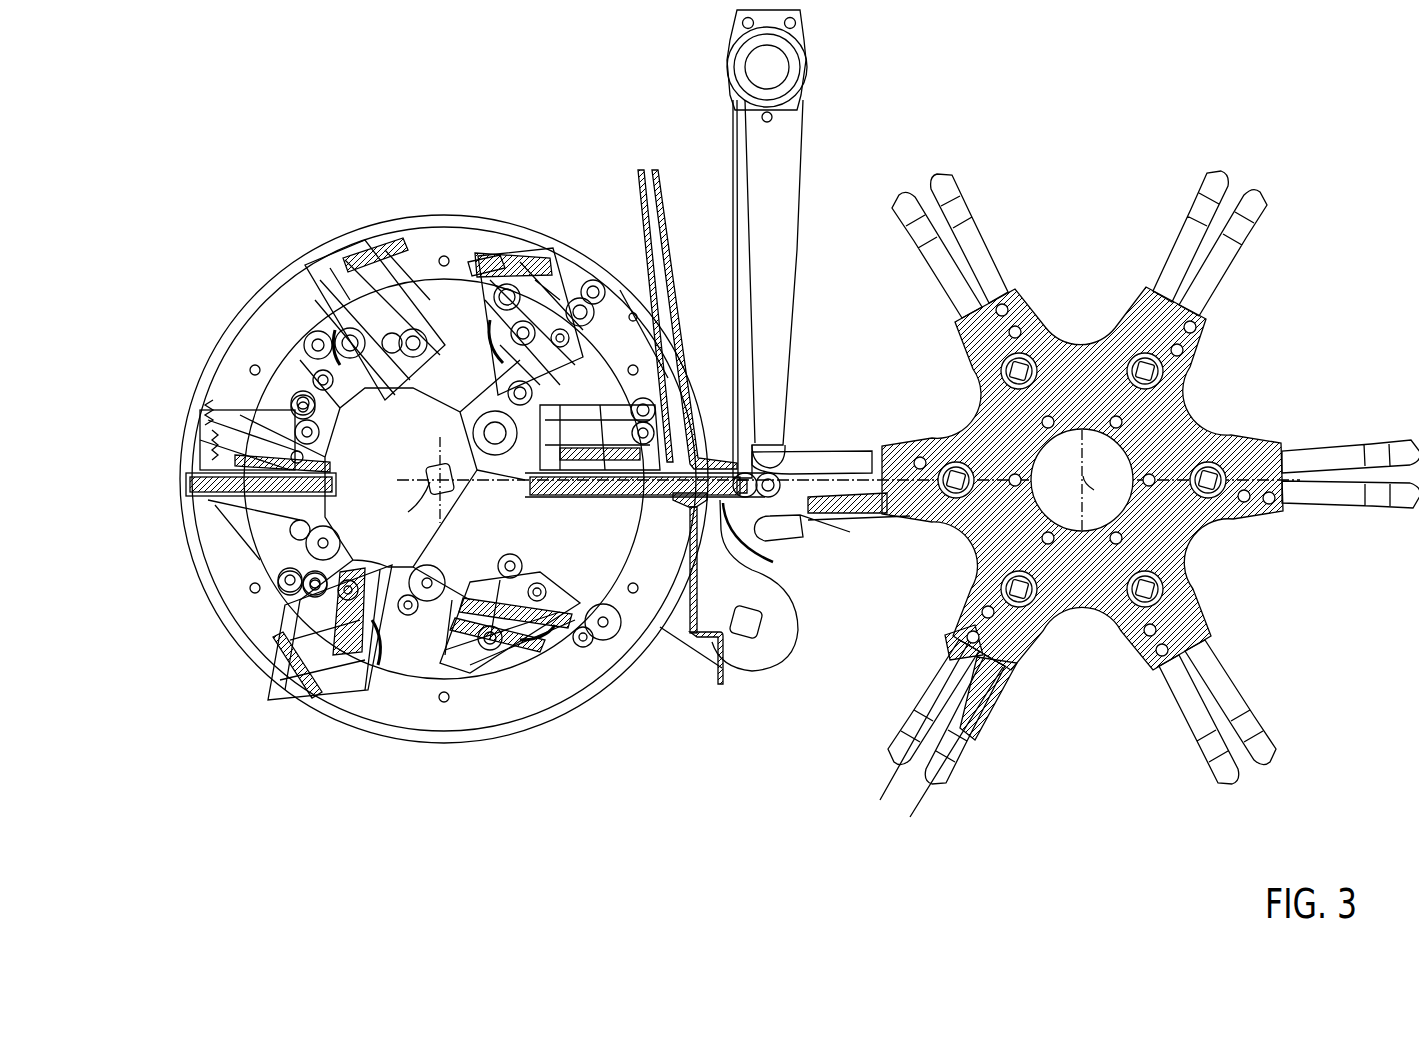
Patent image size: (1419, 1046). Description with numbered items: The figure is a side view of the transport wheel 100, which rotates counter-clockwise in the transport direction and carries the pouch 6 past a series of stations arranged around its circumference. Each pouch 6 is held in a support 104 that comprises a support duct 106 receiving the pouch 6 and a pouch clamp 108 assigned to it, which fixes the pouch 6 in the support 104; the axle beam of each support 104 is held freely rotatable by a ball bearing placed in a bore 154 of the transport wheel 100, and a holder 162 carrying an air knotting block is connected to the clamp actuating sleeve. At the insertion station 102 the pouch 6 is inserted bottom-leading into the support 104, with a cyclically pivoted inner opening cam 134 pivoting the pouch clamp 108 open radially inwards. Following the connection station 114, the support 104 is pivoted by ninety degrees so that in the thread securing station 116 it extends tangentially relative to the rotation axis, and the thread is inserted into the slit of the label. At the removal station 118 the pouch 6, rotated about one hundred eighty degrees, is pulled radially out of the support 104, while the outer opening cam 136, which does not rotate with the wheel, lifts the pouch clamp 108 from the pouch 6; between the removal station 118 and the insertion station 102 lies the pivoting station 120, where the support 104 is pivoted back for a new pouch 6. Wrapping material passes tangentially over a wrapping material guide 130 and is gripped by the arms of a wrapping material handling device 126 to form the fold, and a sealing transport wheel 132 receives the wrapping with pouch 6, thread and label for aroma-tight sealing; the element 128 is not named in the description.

The transport wheel 100 is at (447, 212).
The insertion station 102 is at (318, 250).
The support 104 is at (175, 468).
The support duct 106 is at (338, 250).
The pouch clamp 108 is at (190, 490).
The connection station 114 is at (310, 715).
The thread securing station 116 is at (478, 683).
The removal station 118 is at (662, 450).
The pivoting station 120 is at (563, 240).
The wrapping material handling device 126 is at (806, 178).
The lever arm 128 is at (745, 278).
The wrapping material guide 130 is at (680, 622).
The sealing transport wheel 132 is at (1078, 196).
The inner opening cam 134 is at (392, 458).
The outer opening cam 136 is at (760, 600).
The bore 154 is at (310, 343).
The holder 162 is at (500, 240).
The pouch 6 is at (700, 542).